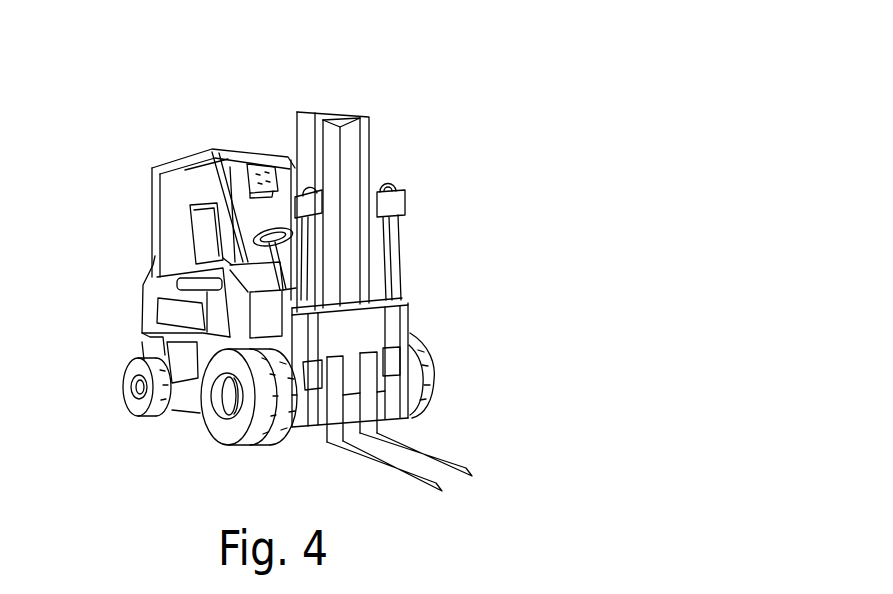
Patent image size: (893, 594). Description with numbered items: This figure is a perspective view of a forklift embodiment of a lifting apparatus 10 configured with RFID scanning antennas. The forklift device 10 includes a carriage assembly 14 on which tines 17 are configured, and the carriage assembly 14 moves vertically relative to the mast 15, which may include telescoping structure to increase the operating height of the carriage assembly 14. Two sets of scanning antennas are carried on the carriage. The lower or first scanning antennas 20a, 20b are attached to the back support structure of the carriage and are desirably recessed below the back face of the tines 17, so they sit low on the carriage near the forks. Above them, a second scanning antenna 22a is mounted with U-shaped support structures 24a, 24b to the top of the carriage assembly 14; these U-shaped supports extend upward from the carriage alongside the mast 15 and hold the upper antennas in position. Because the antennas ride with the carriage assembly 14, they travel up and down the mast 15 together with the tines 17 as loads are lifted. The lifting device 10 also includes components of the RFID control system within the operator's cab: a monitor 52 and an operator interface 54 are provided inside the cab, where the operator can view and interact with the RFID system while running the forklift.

The lifting apparatus 10 is at (404, 72).
The carriage assembly 14 is at (442, 326).
The mast 15 is at (316, 100).
The tines 17 is at (387, 482).
The first scanning antenna 20a is at (400, 368).
The first scanning antenna 20b is at (312, 392).
The second scanning antenna 22a is at (395, 193).
The U-shaped support structure 24a is at (390, 253).
The U-shaped support structure 24b is at (232, 264).
The monitor 52 is at (257, 172).
The operator interface 54 is at (186, 203).